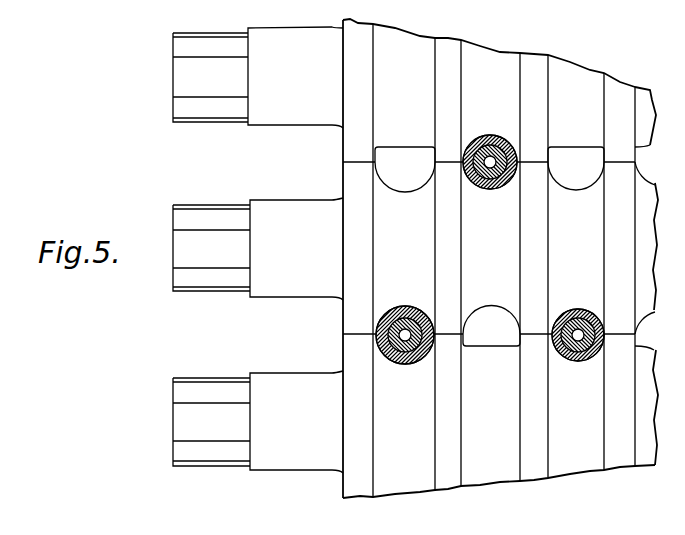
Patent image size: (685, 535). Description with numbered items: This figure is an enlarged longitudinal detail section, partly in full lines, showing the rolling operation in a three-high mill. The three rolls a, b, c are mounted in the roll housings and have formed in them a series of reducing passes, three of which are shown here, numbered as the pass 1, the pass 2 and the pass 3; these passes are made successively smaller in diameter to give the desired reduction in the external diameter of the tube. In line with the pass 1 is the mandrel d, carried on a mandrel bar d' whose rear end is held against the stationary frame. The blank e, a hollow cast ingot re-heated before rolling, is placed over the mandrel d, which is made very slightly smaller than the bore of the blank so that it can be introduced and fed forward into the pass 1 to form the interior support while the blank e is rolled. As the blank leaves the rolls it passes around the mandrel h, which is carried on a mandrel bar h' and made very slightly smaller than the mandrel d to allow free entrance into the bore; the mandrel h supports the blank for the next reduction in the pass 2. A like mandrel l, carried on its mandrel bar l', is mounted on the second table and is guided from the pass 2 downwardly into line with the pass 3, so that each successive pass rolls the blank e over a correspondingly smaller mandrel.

The roll a is at (404, 260).
The roll b is at (490, 263).
The roll c is at (544, 266).
The mandrel d is at (405, 327).
The mandrel bar d' is at (386, 324).
The blank e is at (491, 184).
The mandrel h is at (490, 181).
The mandrel bar h' is at (476, 148).
The mandrel l is at (585, 328).
The mandrel bar l' is at (578, 355).
The roll-pass 1 is at (405, 324).
The roll-pass 2 is at (490, 153).
The roll-pass 3 is at (578, 323).